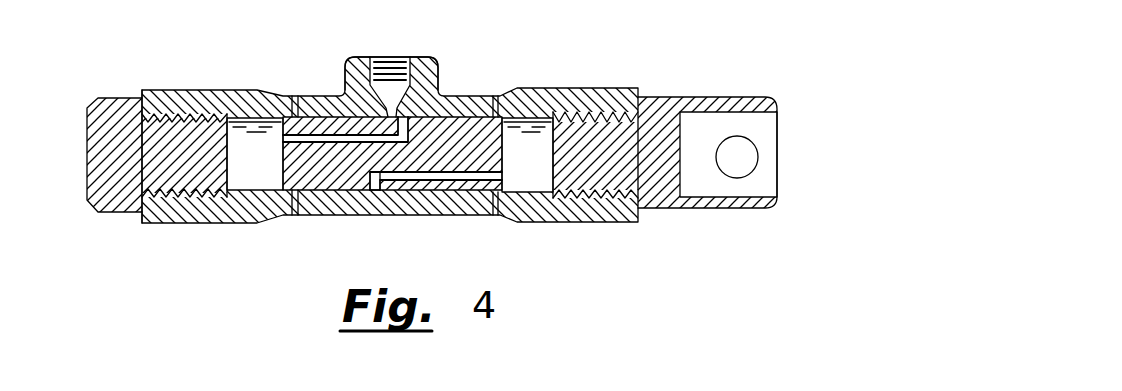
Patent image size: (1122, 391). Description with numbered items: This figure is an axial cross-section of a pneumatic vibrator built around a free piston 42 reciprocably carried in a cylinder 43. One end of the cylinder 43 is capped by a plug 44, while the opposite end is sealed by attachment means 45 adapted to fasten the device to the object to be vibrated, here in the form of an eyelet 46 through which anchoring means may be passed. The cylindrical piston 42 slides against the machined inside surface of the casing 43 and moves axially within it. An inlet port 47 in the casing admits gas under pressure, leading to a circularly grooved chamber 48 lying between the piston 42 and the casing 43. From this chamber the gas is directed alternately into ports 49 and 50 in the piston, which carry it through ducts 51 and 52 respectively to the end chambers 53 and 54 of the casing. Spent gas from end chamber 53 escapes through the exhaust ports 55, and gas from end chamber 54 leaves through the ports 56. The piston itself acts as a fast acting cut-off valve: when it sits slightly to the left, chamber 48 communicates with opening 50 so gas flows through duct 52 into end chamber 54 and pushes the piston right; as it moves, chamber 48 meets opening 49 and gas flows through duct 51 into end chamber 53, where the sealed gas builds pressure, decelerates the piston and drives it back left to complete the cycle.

The free piston 42 is at (459, 138).
The cylinder 43 is at (527, 106).
The plug 44 is at (142, 192).
The sealing means 45 is at (660, 112).
The eyelet 46 is at (721, 182).
The inlet port 47 is at (394, 62).
The circularly grooved chamber 48 is at (390, 192).
The port 49 is at (373, 186).
The port 50 is at (404, 112).
The duct 51 is at (452, 178).
The duct 52 is at (333, 134).
The end chamber 53 is at (534, 172).
The end chamber 54 is at (269, 128).
The exhaust ports 55 is at (497, 98).
The ports 56 is at (293, 97).